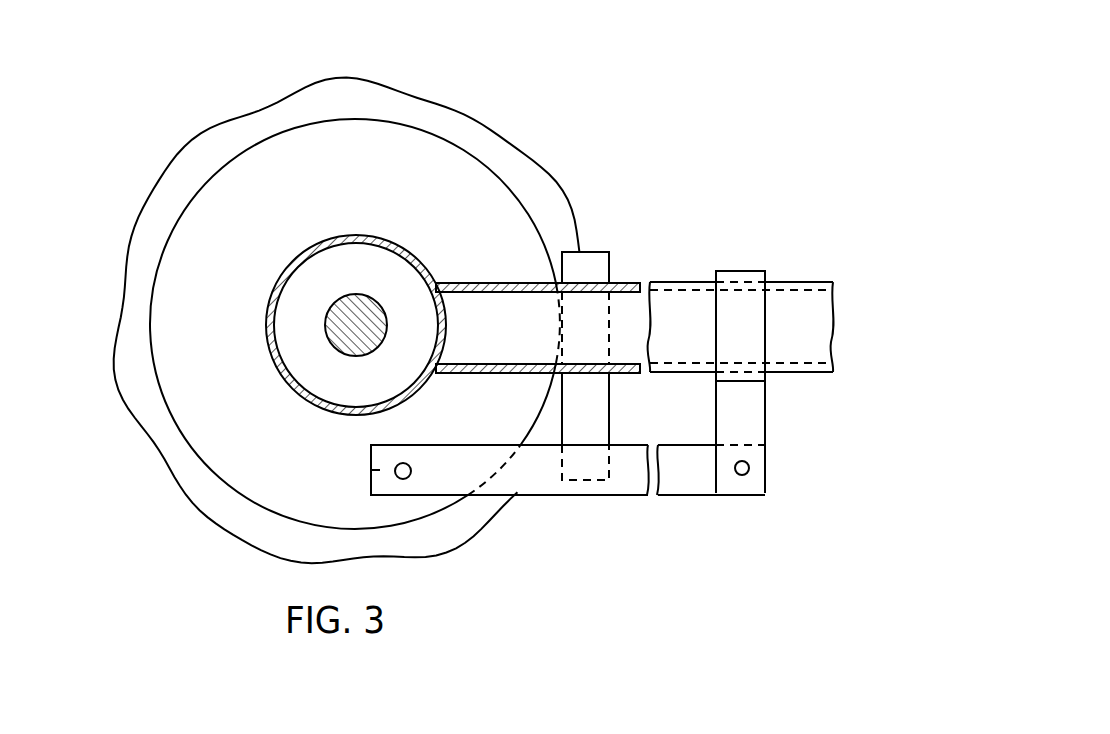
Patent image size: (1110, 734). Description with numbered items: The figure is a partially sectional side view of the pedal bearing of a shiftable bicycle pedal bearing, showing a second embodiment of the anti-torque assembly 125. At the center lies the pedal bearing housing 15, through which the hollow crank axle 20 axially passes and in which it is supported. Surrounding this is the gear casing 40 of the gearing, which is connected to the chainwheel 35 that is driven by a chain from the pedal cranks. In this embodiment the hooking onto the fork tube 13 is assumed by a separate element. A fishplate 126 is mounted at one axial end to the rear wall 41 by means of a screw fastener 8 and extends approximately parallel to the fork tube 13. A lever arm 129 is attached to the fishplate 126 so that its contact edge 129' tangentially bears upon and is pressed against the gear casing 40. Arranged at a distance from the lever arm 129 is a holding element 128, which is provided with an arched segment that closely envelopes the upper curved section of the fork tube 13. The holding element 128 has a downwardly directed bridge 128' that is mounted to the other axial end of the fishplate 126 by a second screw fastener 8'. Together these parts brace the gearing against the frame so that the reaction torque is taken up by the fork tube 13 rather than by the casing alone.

The chainwheel 35 is at (200, 167).
The gear casing 40 is at (343, 119).
The rear wall 41 is at (229, 372).
The pedal bearing housing 15 is at (275, 287).
The crank axle 20 is at (367, 308).
The fork tube 13 is at (668, 301).
The lever arm 129 is at (592, 336).
The contact edge 129' is at (517, 261).
The holding element 128 is at (740, 338).
The bridge 128' is at (780, 413).
The fishplate 126 is at (631, 488).
The anti-torque assembly 125 is at (690, 500).
The screw fastener 8 is at (371, 469).
The screw fastener 8' is at (771, 467).